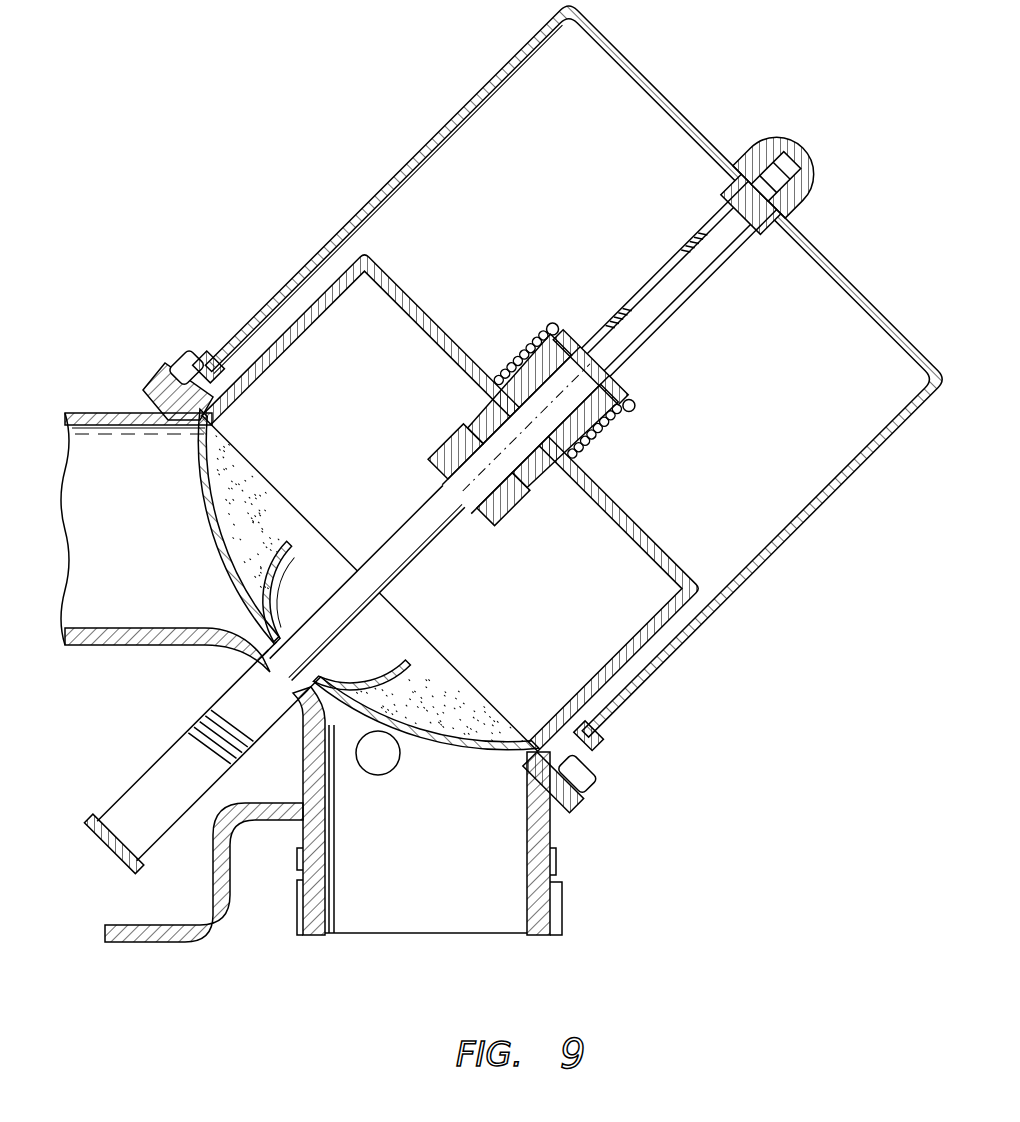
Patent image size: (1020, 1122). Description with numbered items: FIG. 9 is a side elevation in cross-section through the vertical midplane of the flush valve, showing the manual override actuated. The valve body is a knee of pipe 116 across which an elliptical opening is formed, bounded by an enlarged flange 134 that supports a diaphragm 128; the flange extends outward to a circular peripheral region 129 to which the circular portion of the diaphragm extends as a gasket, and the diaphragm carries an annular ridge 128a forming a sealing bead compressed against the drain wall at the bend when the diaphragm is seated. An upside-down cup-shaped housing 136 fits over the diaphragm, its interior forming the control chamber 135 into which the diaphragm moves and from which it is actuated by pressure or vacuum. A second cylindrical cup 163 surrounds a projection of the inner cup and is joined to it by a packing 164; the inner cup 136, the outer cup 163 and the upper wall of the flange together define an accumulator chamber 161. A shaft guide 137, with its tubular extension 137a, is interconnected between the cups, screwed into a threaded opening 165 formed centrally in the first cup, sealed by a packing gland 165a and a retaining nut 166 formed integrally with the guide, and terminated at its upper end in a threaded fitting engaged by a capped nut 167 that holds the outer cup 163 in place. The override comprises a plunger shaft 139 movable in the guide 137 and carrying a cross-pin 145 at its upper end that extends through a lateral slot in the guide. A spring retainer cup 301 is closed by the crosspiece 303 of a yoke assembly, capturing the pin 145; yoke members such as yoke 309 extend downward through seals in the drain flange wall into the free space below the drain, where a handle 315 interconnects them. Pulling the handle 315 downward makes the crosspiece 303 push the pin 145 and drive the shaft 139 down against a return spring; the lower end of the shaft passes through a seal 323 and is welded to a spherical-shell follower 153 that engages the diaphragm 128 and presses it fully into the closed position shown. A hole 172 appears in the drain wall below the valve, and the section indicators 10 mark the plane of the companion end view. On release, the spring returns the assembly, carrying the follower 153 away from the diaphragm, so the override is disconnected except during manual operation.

The section line 10- 10 is at (834, 113).
The inlet pipe 116 is at (260, 660).
The diaphragm 128 is at (232, 590).
The annular ridge 128a is at (290, 693).
The circular peripheral region 129 is at (597, 796).
The enlarged flange 134 is at (575, 812).
The control chamber 135 is at (567, 633).
The cup-shaped housing 136 is at (420, 311).
The shaft guide 137 is at (757, 226).
The outer tube 137a is at (695, 291).
The plunger shaft 139 is at (612, 320).
The cross-pin 145 is at (634, 358).
The follower 153 is at (378, 690).
The accumulator chamber 161 is at (779, 441).
The second cylindrical cup 163 is at (850, 286).
The packing 164 is at (600, 740).
The threaded opening 165 is at (482, 410).
The packing gland 165a is at (455, 440).
The retaining nut 166 is at (583, 438).
The capped nut 167 is at (808, 176).
The hole 172 is at (388, 775).
The spring retainer cup 301 is at (634, 404).
The crosspiece 303 is at (549, 322).
The yoke member 309 is at (180, 738).
The handle 315 is at (93, 812).
The seal 323 is at (500, 488).